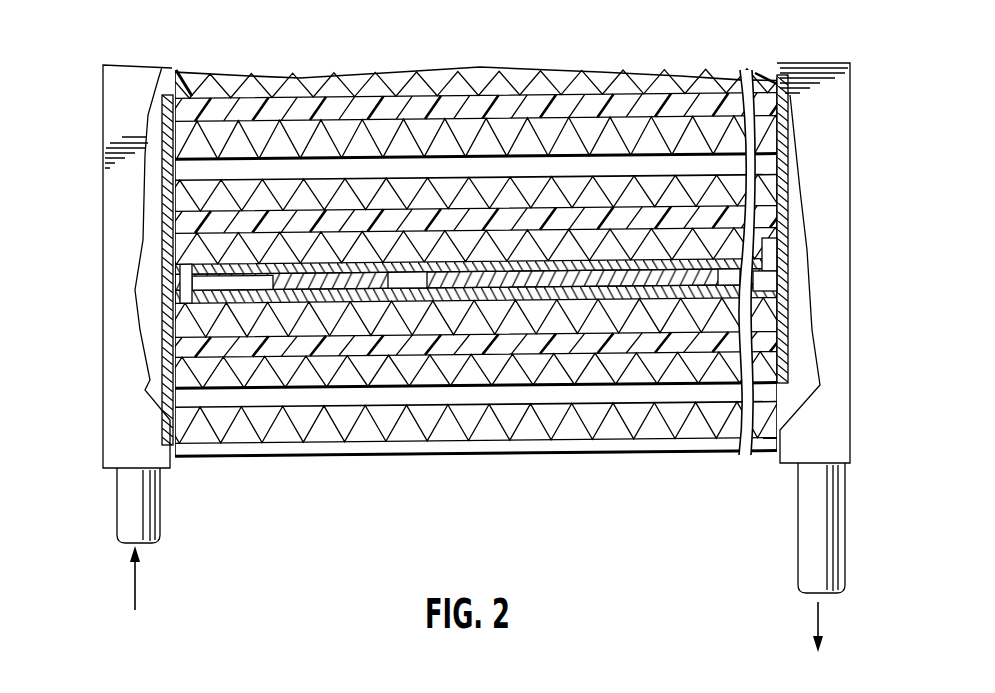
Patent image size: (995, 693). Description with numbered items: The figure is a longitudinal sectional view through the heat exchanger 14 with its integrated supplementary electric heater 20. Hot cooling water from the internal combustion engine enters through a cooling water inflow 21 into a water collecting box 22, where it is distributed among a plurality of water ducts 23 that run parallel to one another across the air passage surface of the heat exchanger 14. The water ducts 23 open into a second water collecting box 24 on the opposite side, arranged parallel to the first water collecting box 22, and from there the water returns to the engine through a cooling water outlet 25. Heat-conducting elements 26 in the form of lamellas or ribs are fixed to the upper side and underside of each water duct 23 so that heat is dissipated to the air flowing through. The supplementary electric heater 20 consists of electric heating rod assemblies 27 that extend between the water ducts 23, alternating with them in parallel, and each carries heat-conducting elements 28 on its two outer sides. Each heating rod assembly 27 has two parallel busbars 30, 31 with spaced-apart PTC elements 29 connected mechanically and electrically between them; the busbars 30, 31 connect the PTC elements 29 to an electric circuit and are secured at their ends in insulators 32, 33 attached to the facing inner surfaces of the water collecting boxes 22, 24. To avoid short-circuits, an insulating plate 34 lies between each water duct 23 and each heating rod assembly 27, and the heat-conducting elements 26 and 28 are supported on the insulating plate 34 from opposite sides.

The heat exchanger 14 is at (350, 471).
The supplementary electric heater 20 is at (232, 286).
The cooling water inflow 21 is at (148, 513).
The water collecting box 22 is at (145, 88).
The water ducts 23 is at (572, 167).
The second water collecting box 24 is at (818, 78).
The cooling water outlet 25 is at (817, 493).
The heat-conducting elements 26 is at (512, 133).
The electric heating rod assemblies 27 is at (778, 274).
The heat-conducting elements 28 is at (650, 236).
The PTC elements 29 is at (350, 283).
The busbar 30 is at (187, 270).
The busbar 31 is at (190, 297).
The insulator 32 is at (180, 287).
The insulator 33 is at (772, 246).
The insulating plate 34 is at (358, 218).